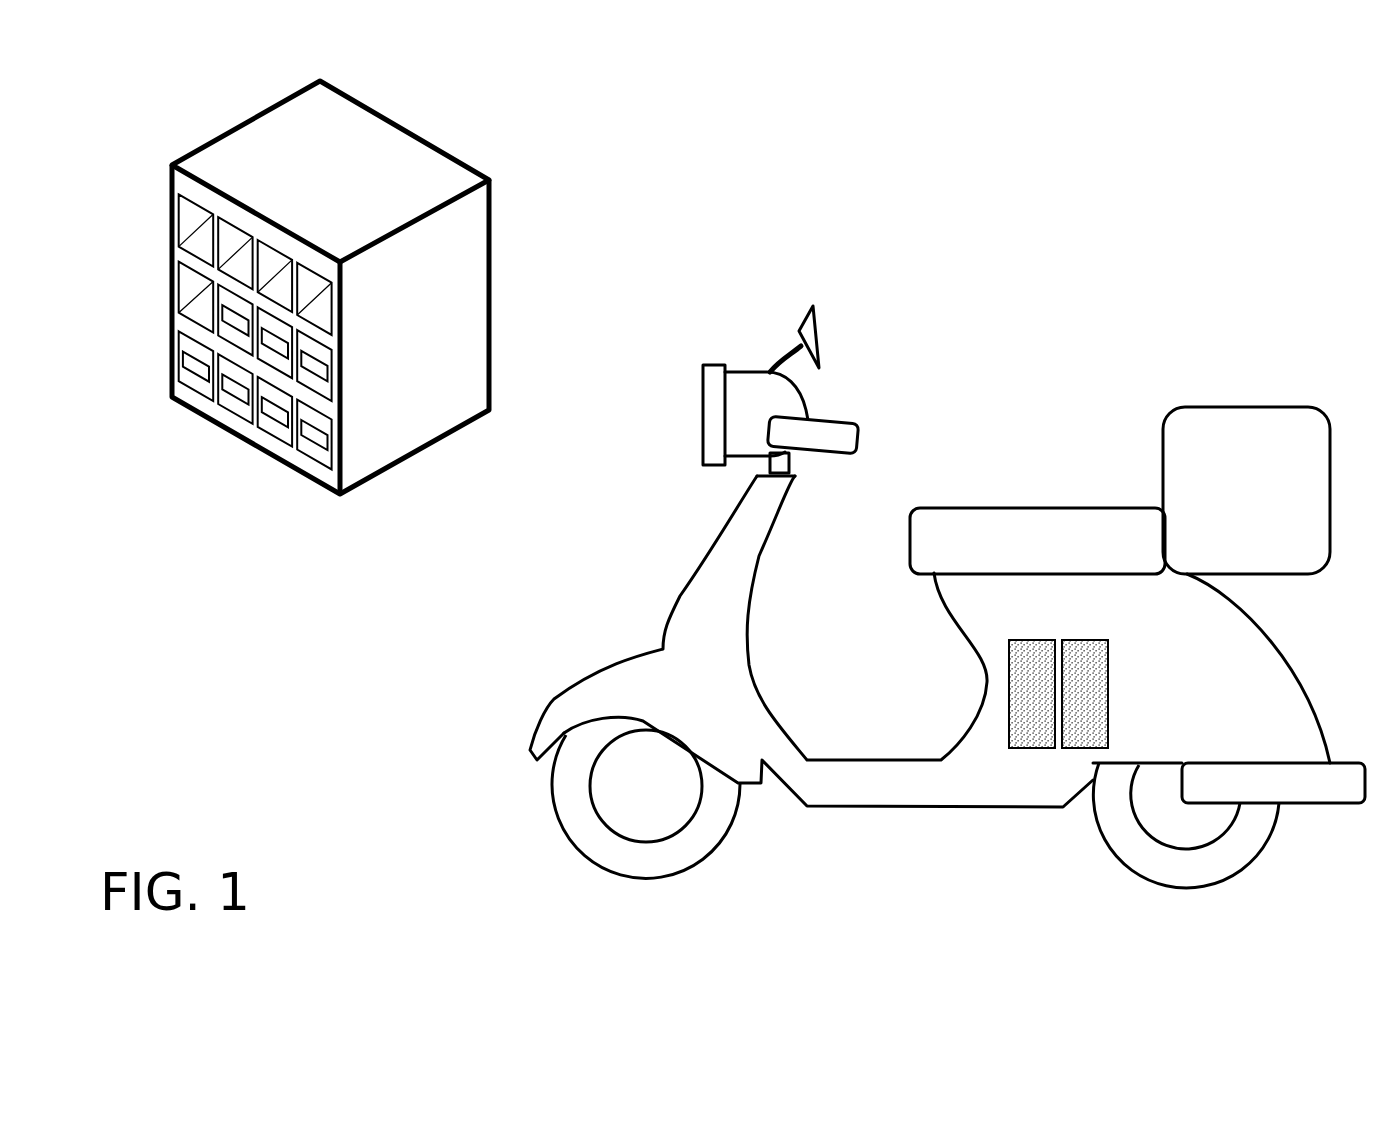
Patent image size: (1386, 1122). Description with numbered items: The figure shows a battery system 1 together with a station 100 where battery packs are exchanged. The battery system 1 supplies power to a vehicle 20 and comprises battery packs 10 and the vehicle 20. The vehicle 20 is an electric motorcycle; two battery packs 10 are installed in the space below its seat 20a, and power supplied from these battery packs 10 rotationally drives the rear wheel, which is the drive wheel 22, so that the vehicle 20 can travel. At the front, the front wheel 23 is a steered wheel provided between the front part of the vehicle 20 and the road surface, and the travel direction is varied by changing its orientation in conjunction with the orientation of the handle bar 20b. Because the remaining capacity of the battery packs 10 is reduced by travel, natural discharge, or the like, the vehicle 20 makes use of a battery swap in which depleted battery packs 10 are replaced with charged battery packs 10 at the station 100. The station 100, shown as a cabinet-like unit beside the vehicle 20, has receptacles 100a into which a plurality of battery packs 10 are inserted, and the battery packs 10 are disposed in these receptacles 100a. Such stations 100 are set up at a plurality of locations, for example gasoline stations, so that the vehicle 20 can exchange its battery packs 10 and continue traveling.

The battery system 1 is at (774, 608).
The battery pack 10 is at (1084, 668).
The vehicle 20 is at (774, 611).
The seat 20a is at (974, 524).
The handle bar 20b is at (827, 418).
The rear wheel (drive wheel) 22 is at (1208, 868).
The front wheel 23 is at (660, 863).
The station 100 is at (298, 268).
The receptacle 100a is at (193, 227).